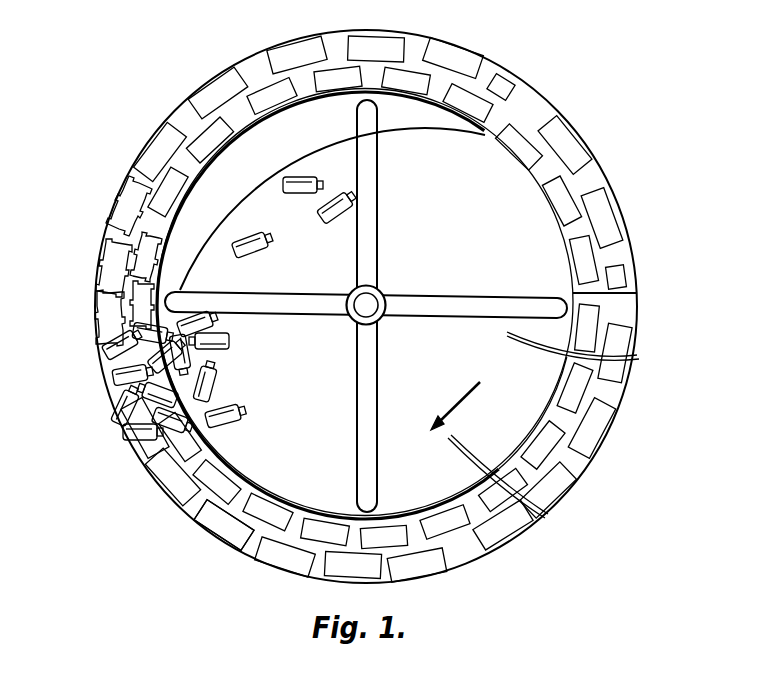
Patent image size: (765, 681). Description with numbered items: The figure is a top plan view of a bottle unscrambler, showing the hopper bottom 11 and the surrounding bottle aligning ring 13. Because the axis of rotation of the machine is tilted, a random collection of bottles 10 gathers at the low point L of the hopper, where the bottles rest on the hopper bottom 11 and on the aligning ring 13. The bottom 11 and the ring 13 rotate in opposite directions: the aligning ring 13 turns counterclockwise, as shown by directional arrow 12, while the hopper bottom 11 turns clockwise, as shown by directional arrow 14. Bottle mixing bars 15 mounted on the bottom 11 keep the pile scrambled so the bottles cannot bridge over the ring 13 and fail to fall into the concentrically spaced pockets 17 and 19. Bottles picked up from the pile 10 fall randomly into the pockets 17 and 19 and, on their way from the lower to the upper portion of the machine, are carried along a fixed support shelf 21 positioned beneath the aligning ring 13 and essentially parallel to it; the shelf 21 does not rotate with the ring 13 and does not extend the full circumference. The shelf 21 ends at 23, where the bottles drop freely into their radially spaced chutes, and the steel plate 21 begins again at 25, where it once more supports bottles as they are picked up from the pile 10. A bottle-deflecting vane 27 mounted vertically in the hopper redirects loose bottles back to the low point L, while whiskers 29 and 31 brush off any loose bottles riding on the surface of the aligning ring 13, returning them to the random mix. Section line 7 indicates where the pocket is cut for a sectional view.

The section line 7-7 / notched pocket 7 is at (150, 224).
The bottles 10 is at (118, 400).
The hopper bottom 11 is at (318, 384).
The directional arrow 12 is at (560, 77).
The aligning ring 13 is at (252, 543).
The directional arrow 14 is at (462, 402).
The bottle mixing bars 15 is at (375, 249).
The pocket 17 is at (156, 476).
The pocket 19 is at (215, 486).
The fixed support shelf 21 is at (558, 385).
The end of shelf 23 is at (638, 291).
The beginning of shelf 25 is at (485, 132).
The bottle-deflecting vane 27 is at (247, 200).
The whisker 29 is at (546, 520).
The whisker 31 is at (639, 357).
The low point L is at (98, 373).